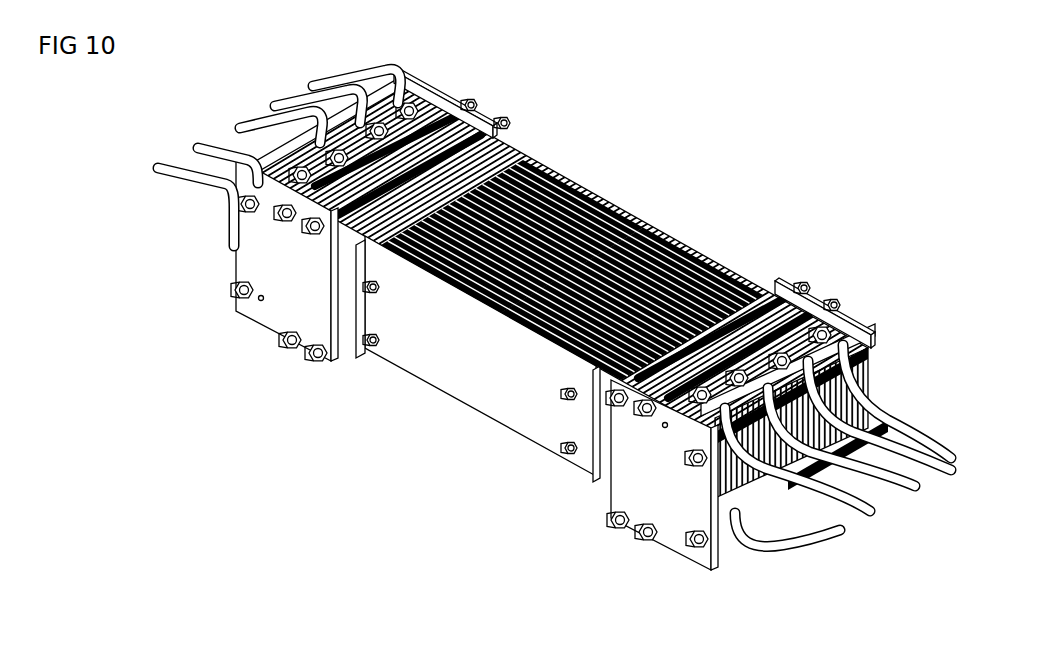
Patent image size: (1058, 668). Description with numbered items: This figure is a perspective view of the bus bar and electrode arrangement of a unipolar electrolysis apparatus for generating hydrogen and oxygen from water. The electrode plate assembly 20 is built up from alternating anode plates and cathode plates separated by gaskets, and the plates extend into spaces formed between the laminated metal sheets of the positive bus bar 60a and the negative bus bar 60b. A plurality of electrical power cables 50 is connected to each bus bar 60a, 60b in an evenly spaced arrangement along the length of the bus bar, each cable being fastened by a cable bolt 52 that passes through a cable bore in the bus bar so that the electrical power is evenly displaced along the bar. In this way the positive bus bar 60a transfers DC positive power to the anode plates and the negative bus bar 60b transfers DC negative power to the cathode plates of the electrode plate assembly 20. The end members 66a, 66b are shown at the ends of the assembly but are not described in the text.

The electrode plate assembly 20 is at (443, 390).
The electrical power cables 50 is at (345, 72).
The cable bolt 52 is at (420, 83).
The positive bus bar 60a is at (505, 143).
The negative bus bar 60b is at (720, 265).
The first end plate 66a is at (245, 312).
The second end plate 66b is at (667, 552).